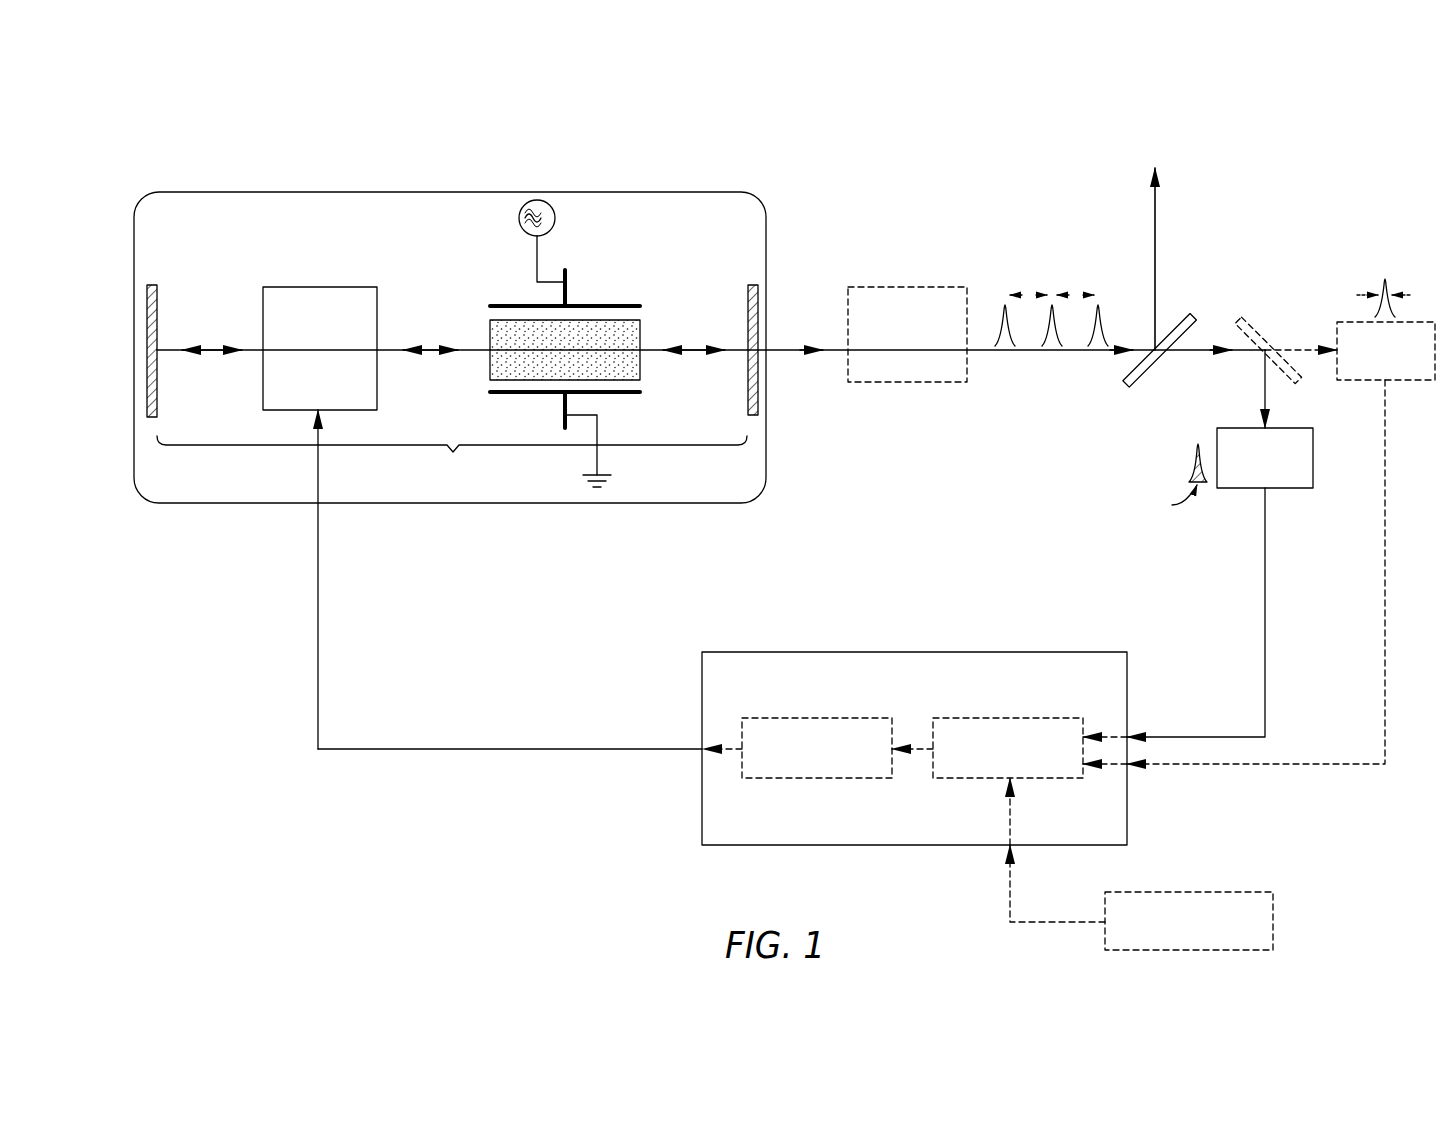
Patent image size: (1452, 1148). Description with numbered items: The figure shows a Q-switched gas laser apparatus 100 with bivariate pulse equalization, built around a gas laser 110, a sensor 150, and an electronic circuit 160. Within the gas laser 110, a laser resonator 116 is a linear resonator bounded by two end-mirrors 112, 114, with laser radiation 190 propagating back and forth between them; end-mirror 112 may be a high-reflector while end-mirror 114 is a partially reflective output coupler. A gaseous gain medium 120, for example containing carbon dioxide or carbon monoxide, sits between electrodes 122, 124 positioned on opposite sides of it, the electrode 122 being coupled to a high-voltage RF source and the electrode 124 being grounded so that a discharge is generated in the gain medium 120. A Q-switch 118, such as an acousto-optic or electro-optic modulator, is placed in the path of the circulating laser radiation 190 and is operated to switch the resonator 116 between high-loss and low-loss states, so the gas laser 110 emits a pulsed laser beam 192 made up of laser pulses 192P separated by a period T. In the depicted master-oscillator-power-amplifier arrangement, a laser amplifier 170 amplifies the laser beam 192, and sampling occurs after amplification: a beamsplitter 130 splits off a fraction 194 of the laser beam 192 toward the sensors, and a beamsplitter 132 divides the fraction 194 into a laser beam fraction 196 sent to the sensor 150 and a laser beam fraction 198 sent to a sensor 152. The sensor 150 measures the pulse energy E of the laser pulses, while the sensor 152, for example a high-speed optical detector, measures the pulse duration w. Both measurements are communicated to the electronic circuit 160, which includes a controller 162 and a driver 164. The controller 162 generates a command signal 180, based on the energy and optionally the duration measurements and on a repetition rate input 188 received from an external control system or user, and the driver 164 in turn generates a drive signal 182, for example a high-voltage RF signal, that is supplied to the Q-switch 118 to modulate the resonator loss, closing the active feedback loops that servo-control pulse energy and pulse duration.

The Q-switched gas laser apparatus 100 is at (250, 92).
The gas laser 110 is at (313, 218).
The end-mirror 112 is at (152, 284).
The end-mirror 114 is at (753, 284).
The laser resonator 116 is at (452, 458).
The Q-switch 118 is at (334, 333).
The gaseous gain medium 120 is at (641, 362).
The electrode 122 is at (522, 305).
The electrode 124 is at (522, 394).
The beamsplitter 130 is at (1131, 386).
The beamsplitter 132 is at (1243, 320).
The sensor 150 is at (1280, 478).
The sensor 152 is at (1401, 371).
The electronic circuit 160 is at (1031, 676).
The controller 162 is at (1023, 769).
The driver 164 is at (832, 769).
The laser amplifier 170 is at (922, 338).
The command signal 180 is at (912, 752).
The drive signal 182 is at (722, 752).
The repetition rate input 188 is at (1204, 941).
The laser radiation 190 is at (236, 347).
The laser beam 192 is at (790, 348).
The laser pulses 192P is at (1002, 318).
The fraction of laser beam 194 is at (1197, 354).
The laser beam fraction 196 is at (1268, 390).
The laser beam fraction 198 is at (1296, 348).